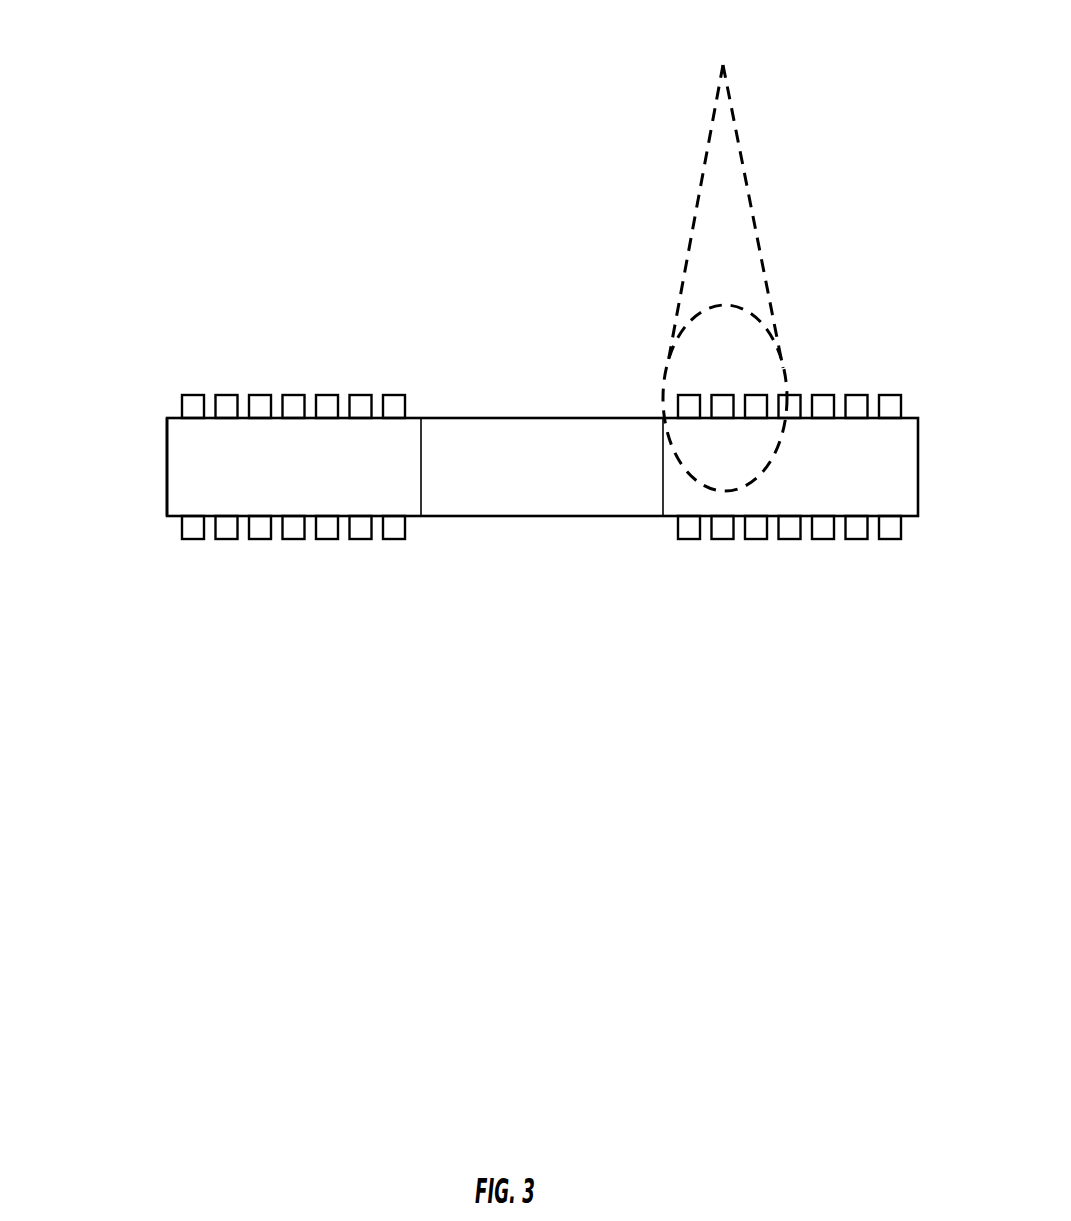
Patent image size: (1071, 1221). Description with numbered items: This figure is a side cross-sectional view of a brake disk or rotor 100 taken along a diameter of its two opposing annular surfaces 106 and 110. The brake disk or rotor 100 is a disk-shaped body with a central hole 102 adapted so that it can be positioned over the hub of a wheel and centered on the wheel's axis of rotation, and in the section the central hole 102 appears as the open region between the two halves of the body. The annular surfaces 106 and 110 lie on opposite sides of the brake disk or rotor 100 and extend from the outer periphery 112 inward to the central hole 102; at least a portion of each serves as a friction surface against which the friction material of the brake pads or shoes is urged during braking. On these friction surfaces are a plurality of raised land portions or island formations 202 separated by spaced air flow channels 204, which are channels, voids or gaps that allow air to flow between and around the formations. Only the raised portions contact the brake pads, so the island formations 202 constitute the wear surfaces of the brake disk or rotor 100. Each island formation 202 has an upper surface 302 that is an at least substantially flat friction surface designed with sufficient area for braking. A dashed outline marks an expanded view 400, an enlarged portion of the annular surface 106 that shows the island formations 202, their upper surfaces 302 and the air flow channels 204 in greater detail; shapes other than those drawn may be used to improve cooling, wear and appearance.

The brake disk or rotor 100 is at (123, 160).
The central hole 102 is at (549, 447).
The annular surface 106 is at (418, 415).
The annular surface 110 is at (664, 518).
The outer periphery 112 is at (167, 467).
The island formations 202 is at (232, 407).
The air flow channels 204 is at (343, 398).
The upper surfaces 302 is at (259, 393).
The expanded view 400 is at (725, 260).